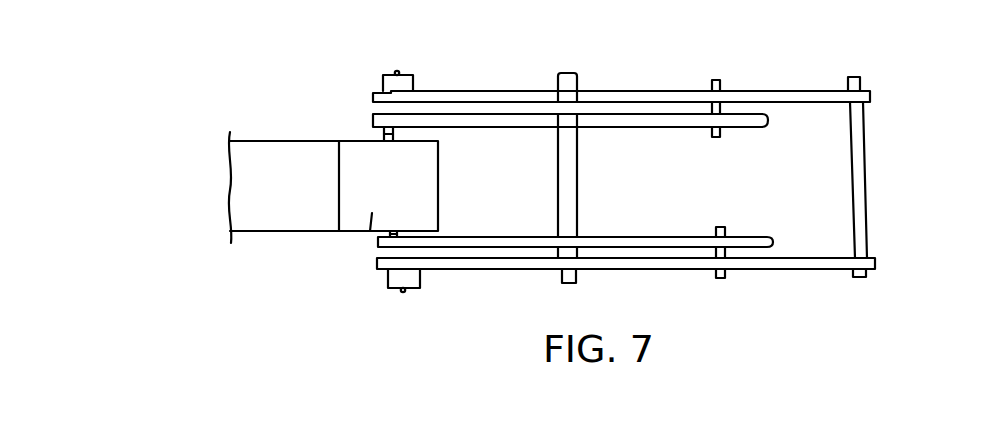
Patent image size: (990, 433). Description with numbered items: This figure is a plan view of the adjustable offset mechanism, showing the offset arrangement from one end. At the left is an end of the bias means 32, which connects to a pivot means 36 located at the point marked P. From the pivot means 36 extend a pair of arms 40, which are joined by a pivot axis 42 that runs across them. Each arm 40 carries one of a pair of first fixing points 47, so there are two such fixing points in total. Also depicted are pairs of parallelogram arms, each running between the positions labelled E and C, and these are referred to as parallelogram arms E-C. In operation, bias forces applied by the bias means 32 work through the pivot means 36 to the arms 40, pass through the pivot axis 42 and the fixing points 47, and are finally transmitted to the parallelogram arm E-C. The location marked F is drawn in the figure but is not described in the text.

The bias means 32 is at (270, 165).
The pivot means 36 is at (380, 233).
The pair of arms 40 is at (463, 120).
The pivot axis 42 is at (570, 283).
The first fixing points 47 is at (722, 80).
The parallelogram arm end E is at (398, 73).
The joints F is at (384, 132).
The parallelogram arm end C is at (858, 178).